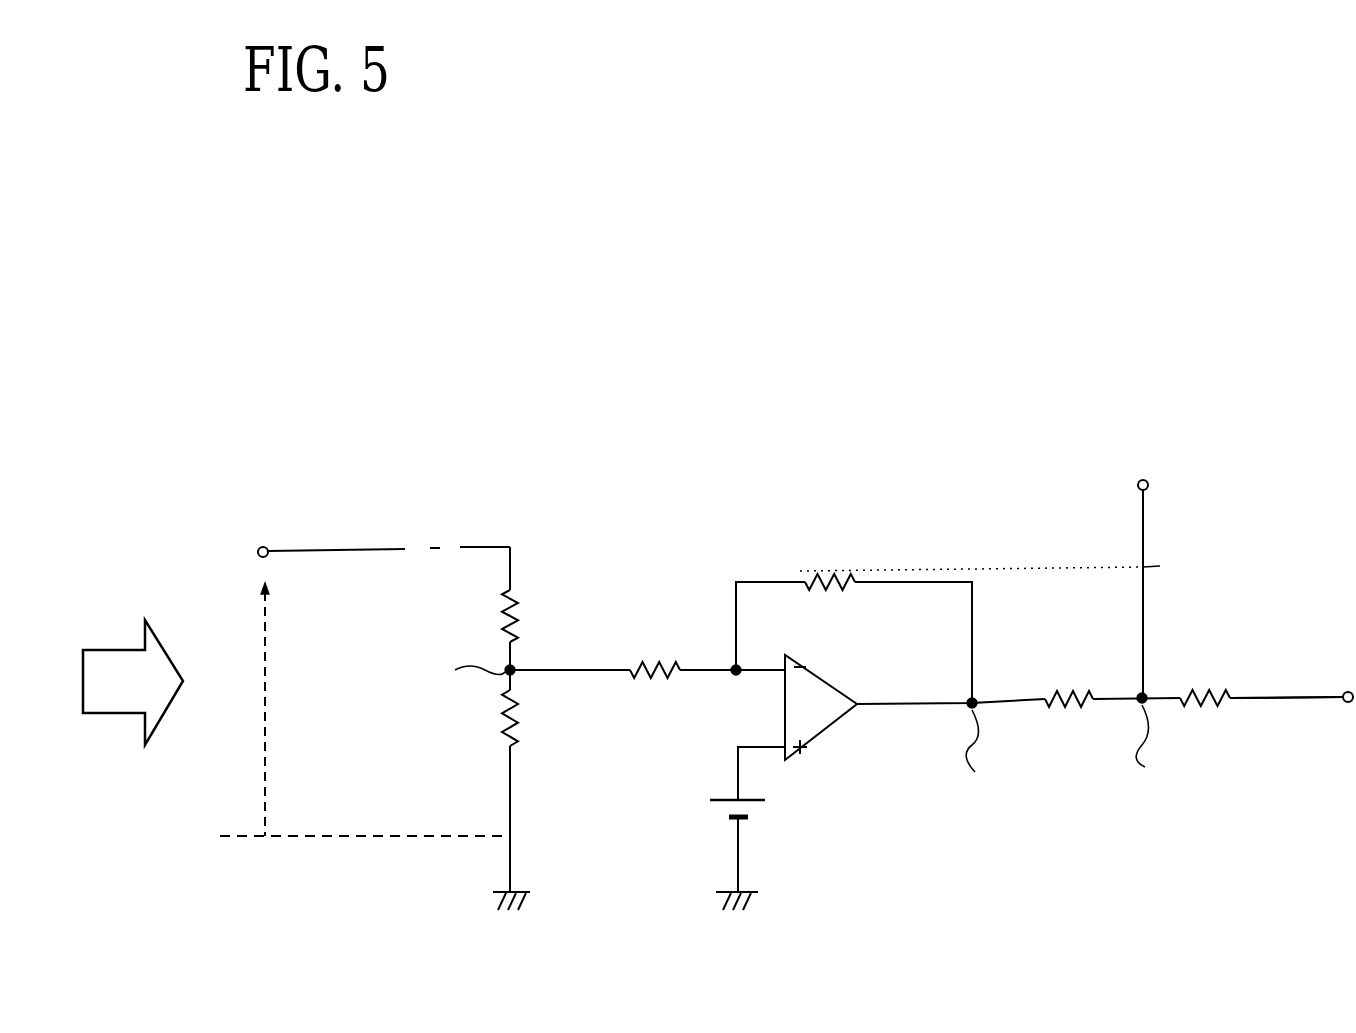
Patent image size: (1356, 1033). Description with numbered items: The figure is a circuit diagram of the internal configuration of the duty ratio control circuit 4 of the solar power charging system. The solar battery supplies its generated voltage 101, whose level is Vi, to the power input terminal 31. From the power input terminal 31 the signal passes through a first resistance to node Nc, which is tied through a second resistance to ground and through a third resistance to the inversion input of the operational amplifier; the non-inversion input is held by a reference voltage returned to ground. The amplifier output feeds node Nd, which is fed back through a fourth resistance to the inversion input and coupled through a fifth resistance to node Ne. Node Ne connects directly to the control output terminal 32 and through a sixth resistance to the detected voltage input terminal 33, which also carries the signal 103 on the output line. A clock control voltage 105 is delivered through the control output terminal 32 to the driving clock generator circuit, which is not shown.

The duty ratio control circuit 4 is at (985, 307).
The power input terminal 31 is at (264, 546).
The control output terminal 32 is at (1143, 479).
The detected voltage input terminal 33 is at (1346, 691).
The generated voltage 101 is at (113, 658).
The output line 103 is at (1285, 700).
The clock control voltage 105 is at (1160, 566).